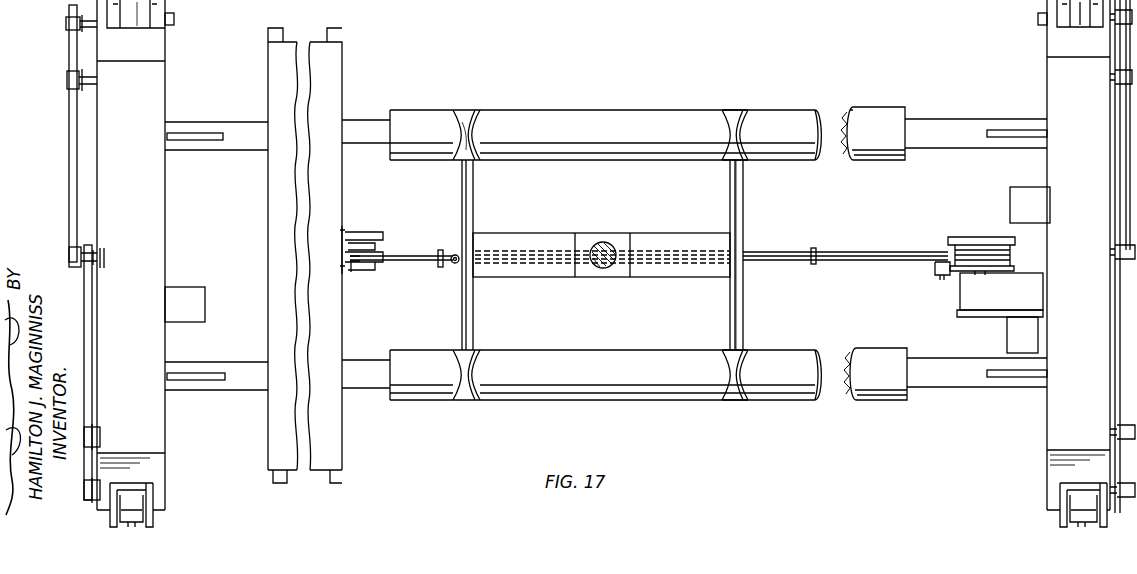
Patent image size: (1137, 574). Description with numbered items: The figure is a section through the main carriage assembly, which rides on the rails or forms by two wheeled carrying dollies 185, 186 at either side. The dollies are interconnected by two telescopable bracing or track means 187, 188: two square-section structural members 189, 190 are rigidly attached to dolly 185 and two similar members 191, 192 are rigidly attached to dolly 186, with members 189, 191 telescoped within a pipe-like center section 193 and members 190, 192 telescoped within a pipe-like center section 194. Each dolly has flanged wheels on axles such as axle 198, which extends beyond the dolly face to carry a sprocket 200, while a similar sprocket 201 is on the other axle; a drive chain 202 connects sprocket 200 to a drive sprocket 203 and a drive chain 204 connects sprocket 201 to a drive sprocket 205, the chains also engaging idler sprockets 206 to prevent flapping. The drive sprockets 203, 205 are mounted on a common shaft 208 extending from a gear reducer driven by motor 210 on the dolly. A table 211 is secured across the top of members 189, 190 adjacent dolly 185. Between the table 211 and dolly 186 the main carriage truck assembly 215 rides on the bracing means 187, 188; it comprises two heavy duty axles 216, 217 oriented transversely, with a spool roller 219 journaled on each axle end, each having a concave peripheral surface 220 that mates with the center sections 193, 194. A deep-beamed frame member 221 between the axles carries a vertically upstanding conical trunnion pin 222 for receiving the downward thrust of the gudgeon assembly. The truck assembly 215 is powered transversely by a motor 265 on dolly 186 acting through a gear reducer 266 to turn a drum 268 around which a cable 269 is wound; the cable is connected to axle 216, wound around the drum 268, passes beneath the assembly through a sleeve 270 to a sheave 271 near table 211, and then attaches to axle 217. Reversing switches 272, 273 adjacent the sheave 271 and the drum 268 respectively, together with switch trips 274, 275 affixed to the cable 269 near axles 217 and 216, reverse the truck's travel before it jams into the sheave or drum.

The wheeled carrying dolly 185 is at (131, 255).
The wheeled carrying dolly 186 is at (1072, 263).
The telescopable bracing means 187 is at (434, 400).
The telescopable bracing means 188 is at (435, 107).
The rectilinear structural member 189 is at (265, 384).
The rectilinear structural member 190 is at (251, 125).
The rectilinear structural member 191 is at (997, 388).
The rectilinear structural member 192 is at (976, 126).
The pipe-like center section 193 is at (592, 400).
The pipe-like center section 194 is at (600, 116).
The axle 198 is at (98, 508).
The sprocket 200 is at (96, 484).
The sprocket 201 is at (66, 24).
The drive chain 202 is at (92, 346).
The drive sprocket 203 is at (95, 257).
The drive chain 204 is at (69, 166).
The drive sprocket 205 is at (69, 258).
The idler sprocket 206 is at (67, 80).
The common shaft 208 is at (100, 258).
The motor 210 is at (214, 268).
The table 211 is at (321, 46).
The main carriage truck assembly 215 is at (750, 190).
The heavy duty axle 216 is at (742, 215).
The heavy duty axle 217 is at (497, 187).
The spool roller 219 is at (486, 95).
The concave peripheral surface 220 is at (478, 128).
The deep-beamed frame member 221 is at (695, 236).
The conical trunnion pin 222 is at (635, 222).
The motor 265 is at (1010, 330).
The gear reducer 266 is at (1000, 295).
The drum 268 is at (980, 238).
The cable 269 is at (902, 234).
The sleeve 270 is at (515, 246).
The sheave 271 is at (366, 268).
The reversing switch 272 is at (383, 250).
The reversing switch 273 is at (936, 272).
The switch trip 274 is at (440, 268).
The switch trip 275 is at (813, 262).